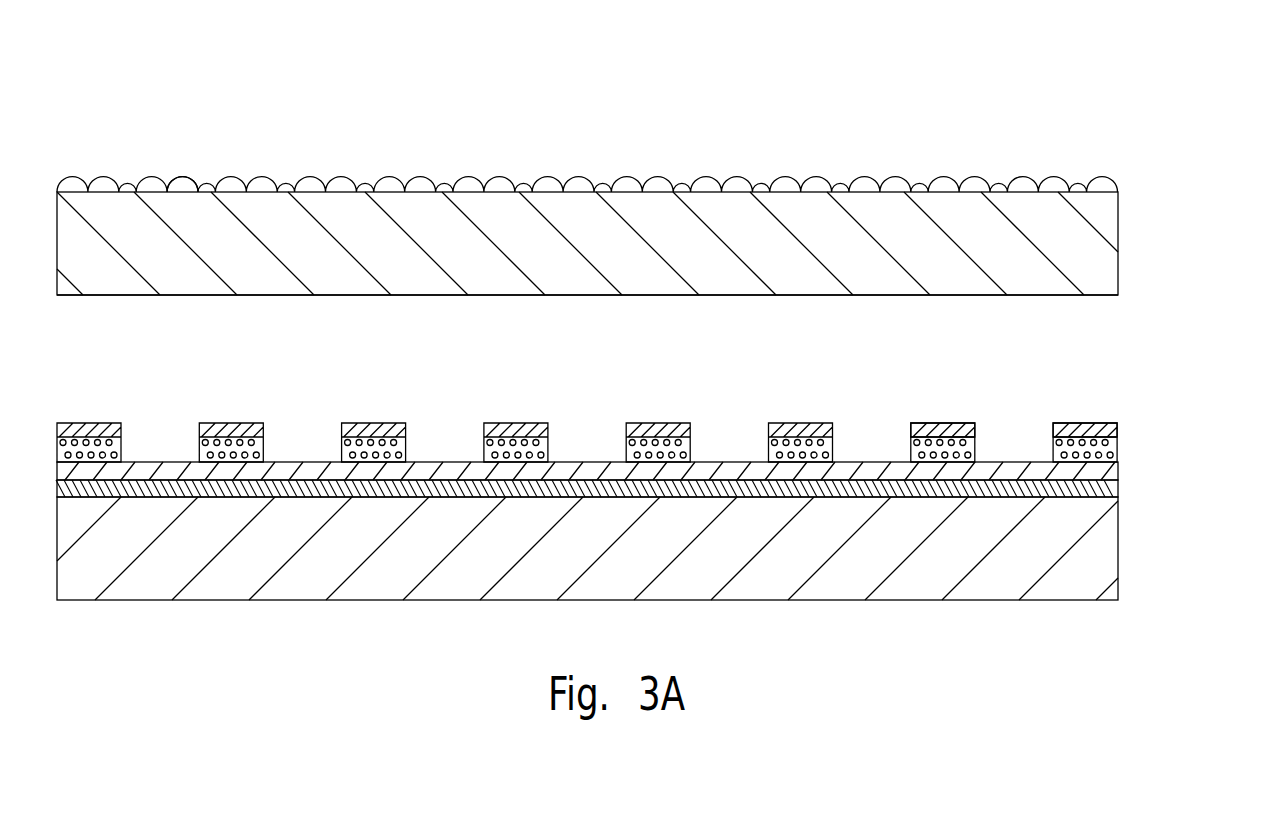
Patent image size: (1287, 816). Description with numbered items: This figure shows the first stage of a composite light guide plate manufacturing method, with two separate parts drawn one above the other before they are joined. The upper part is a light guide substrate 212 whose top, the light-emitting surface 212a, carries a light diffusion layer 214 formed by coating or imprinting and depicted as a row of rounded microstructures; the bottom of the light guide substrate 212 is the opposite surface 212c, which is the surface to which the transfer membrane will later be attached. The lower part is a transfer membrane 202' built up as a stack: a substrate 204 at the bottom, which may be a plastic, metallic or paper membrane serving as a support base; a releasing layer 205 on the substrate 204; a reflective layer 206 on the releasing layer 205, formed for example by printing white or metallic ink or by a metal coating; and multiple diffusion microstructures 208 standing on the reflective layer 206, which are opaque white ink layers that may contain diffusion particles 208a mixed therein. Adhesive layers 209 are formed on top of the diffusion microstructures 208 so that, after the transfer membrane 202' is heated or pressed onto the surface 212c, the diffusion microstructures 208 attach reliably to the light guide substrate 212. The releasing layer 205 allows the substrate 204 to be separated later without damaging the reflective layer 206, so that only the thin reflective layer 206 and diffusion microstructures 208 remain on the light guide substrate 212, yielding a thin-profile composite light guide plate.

The transfer membrane 202' is at (666, 477).
The substrate 204 is at (1105, 578).
The releasing layer 205 is at (1087, 490).
The reflective layer 206 is at (1117, 468).
The diffusion microstructures 208 is at (625, 408).
The diffusion particles 208a is at (768, 443).
The adhesive layers 209 is at (943, 423).
The light guide substrate 212 is at (1107, 277).
The light-emitting surface 212a is at (180, 190).
The surface 212c is at (343, 296).
The light diffusion layer 214 is at (1110, 178).